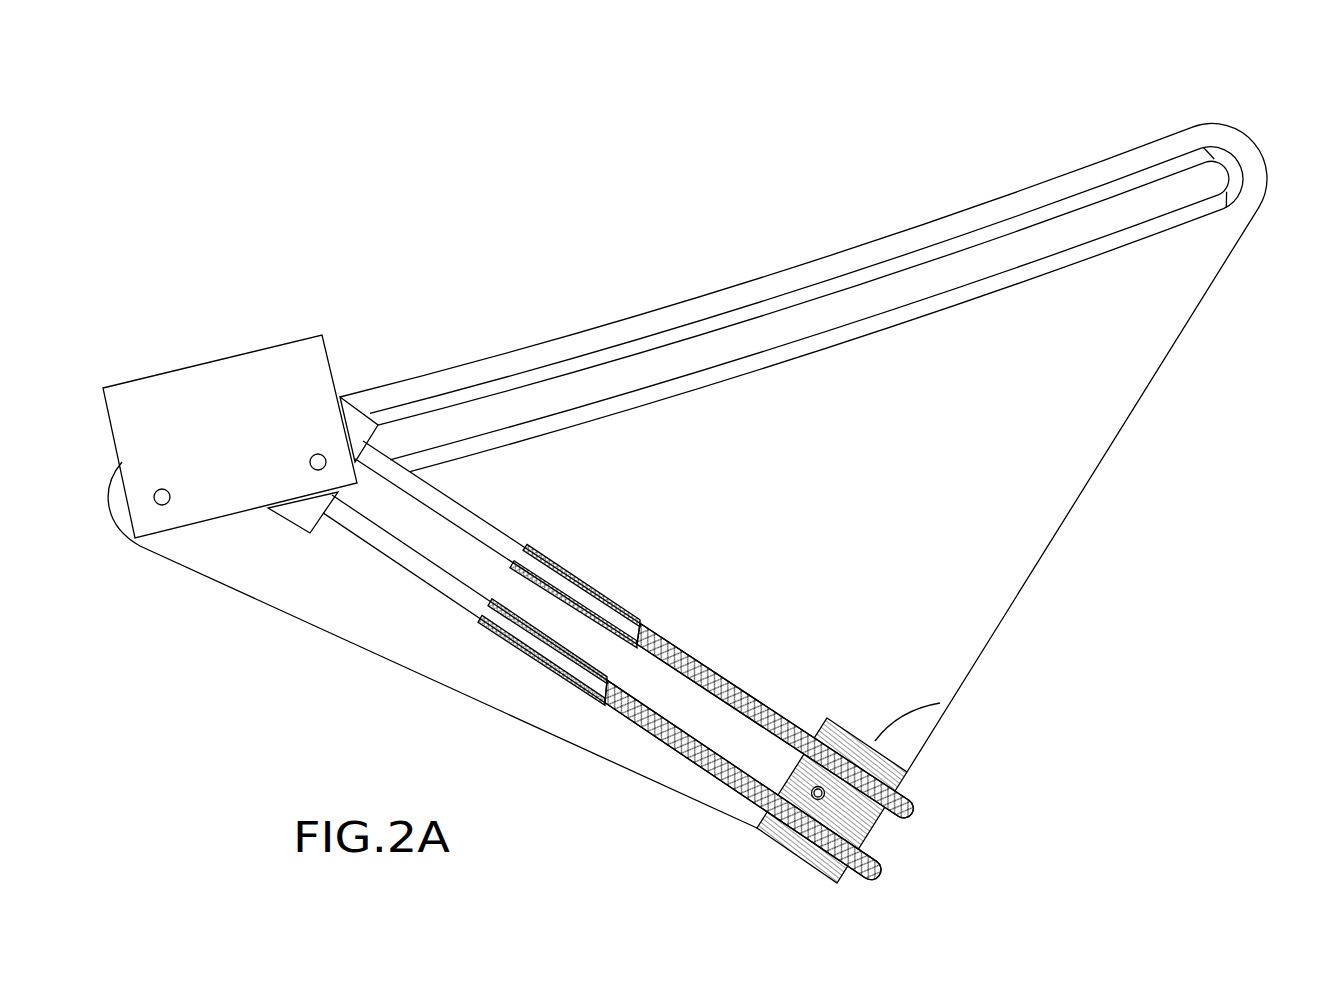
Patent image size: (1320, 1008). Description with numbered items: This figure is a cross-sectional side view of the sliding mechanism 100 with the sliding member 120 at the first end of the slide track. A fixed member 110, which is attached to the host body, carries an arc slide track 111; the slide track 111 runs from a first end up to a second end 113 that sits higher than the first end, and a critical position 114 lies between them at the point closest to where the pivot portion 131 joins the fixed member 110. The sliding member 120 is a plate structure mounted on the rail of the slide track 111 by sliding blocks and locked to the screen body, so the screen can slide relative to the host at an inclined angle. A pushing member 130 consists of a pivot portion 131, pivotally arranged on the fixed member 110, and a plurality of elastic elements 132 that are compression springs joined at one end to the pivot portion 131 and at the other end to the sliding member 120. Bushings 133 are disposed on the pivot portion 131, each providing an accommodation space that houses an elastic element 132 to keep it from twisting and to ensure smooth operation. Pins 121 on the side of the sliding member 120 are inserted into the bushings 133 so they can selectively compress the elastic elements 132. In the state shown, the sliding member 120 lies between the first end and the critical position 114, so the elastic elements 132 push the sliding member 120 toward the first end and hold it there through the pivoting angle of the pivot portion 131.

The device 100 is at (181, 137).
The fixed member 110 is at (1080, 428).
The slide track 111 is at (857, 280).
The second end 113 is at (1213, 178).
The critical position 114 is at (640, 373).
The sliding member 120 is at (235, 398).
The pin 121 is at (397, 553).
The pushing member 130 is at (821, 711).
The pivot portion 131 is at (868, 748).
The elastic element 132 is at (755, 683).
The bushing 133 is at (635, 612).